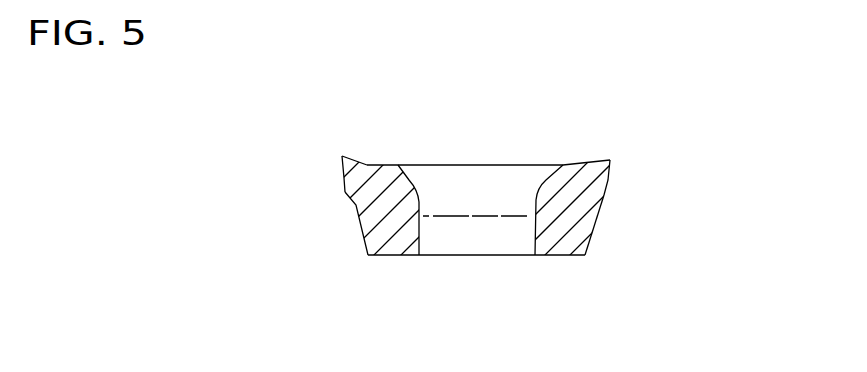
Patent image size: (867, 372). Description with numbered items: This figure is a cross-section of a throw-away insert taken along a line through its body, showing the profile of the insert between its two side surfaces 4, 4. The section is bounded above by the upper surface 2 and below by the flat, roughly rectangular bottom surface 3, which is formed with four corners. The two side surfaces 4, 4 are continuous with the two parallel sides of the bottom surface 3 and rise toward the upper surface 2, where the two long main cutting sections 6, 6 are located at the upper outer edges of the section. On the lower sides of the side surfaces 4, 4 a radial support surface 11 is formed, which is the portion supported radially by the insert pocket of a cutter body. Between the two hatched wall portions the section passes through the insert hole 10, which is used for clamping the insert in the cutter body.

The upper surface 2 is at (378, 165).
The bottom surface 3 is at (395, 255).
The side surface 4 is at (340, 170).
The main cutting section 6 is at (340, 154).
The insert hole 10 is at (542, 183).
The radial support surface 11 is at (363, 232).